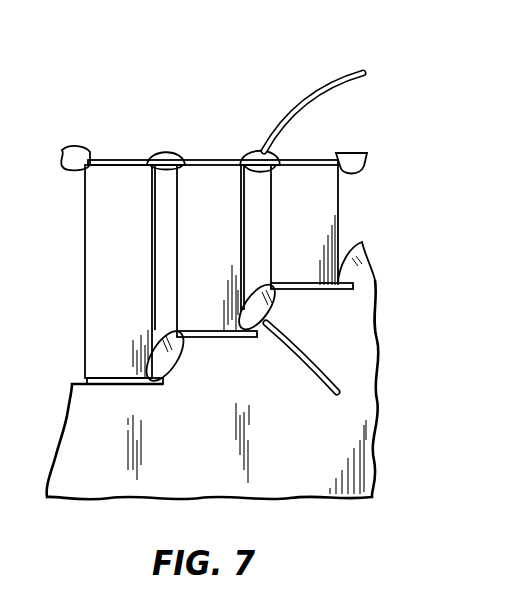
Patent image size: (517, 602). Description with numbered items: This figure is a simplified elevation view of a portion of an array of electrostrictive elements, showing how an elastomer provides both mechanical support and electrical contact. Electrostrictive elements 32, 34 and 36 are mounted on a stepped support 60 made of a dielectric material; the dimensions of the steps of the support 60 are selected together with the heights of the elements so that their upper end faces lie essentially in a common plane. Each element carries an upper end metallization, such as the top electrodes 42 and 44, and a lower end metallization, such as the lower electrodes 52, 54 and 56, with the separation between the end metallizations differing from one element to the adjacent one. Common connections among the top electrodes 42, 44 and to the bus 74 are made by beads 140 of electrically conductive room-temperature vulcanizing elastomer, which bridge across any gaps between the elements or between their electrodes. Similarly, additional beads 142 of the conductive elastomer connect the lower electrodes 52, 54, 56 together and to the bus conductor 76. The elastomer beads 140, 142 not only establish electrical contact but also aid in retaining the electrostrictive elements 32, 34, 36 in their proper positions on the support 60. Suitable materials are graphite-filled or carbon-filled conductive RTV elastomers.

The electrostrictive element 32 is at (92, 270).
The electrostrictive element 34 is at (220, 180).
The electrostrictive element 36 is at (334, 196).
The top electrode 42 is at (120, 160).
The top electrode 44 is at (200, 160).
The lower electrode 52 is at (115, 384).
The lower electrode 54 is at (215, 333).
The lower electrode 56 is at (322, 290).
The stepped support 60 is at (355, 440).
The bus 74 is at (333, 85).
The bus conductor 76 is at (292, 363).
The beads of electrically conductive RTV elastomer 140 is at (72, 150).
The additional beads of RTV 142 is at (363, 253).